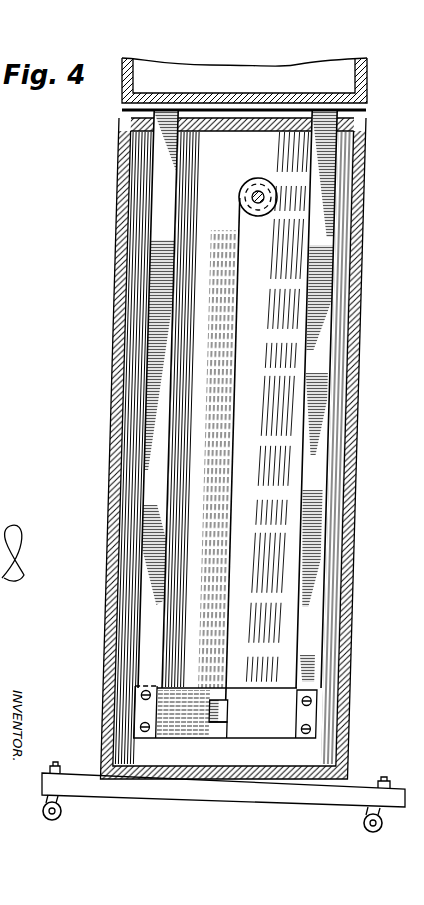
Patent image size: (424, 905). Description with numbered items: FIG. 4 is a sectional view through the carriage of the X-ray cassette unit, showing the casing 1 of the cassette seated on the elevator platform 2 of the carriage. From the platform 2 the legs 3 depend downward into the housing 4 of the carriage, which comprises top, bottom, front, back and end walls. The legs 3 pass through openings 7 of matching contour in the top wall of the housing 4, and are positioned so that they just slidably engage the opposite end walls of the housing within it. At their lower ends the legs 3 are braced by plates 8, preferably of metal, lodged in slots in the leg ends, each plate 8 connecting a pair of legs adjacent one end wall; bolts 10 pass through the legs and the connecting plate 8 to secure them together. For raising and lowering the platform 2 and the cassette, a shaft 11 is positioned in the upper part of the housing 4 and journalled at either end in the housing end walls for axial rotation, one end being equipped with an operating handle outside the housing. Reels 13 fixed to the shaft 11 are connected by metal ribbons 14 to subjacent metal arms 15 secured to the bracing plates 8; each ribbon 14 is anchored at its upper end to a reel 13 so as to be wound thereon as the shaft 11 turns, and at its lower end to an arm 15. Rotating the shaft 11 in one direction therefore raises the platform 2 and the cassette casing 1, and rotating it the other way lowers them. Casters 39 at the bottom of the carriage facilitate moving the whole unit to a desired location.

The casing 1 is at (123, 72).
The elevator platform 2 is at (128, 104).
The legs 3 is at (153, 182).
The housing 4 is at (116, 325).
The openings 7 is at (128, 119).
The plates 8 is at (263, 728).
The bolts 10 is at (315, 728).
The shaft 11 is at (259, 191).
The reels 13 is at (249, 212).
The metal ribbons 14 is at (240, 328).
The metal arms 15 is at (213, 721).
The casters 39 is at (368, 814).